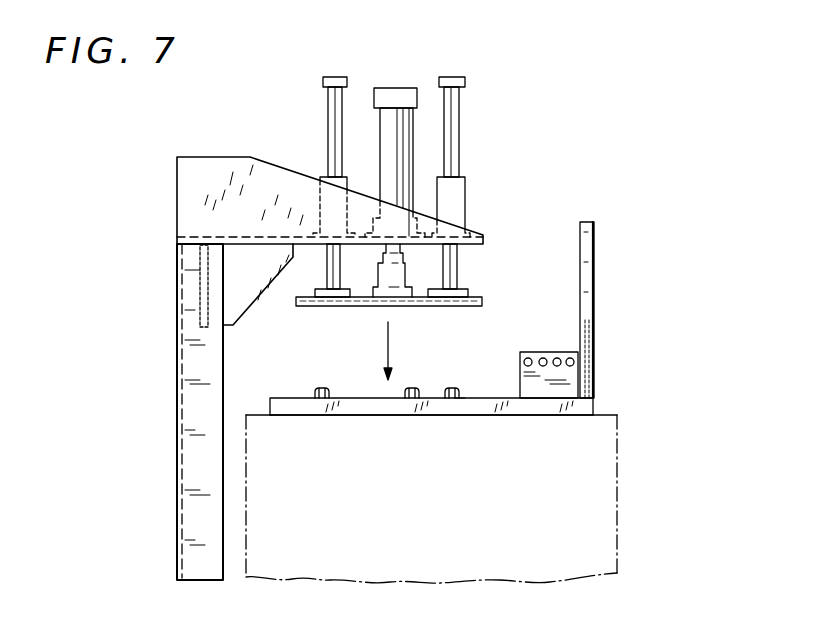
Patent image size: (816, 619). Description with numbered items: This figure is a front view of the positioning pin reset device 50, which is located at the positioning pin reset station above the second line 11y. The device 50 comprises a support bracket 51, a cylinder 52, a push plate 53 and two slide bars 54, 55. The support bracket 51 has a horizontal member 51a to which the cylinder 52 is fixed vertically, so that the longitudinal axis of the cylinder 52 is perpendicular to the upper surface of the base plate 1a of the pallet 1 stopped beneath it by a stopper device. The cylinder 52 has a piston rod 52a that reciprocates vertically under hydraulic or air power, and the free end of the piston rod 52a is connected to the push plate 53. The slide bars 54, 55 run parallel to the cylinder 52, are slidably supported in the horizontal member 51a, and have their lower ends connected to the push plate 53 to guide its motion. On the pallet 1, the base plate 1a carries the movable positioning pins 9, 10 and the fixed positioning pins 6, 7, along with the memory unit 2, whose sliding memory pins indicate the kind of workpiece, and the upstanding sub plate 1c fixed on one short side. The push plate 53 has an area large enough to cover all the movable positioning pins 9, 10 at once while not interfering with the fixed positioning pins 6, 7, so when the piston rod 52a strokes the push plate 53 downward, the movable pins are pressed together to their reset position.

The pallet 1 is at (395, 410).
The base plate 1a is at (537, 412).
The sub plate 1c is at (595, 305).
The memory unit 2 is at (540, 350).
The fixed positioning pin 6 is at (415, 390).
The fixed positioning pin 7 is at (461, 400).
The movable positioning pin 9 is at (315, 390).
The movable positioning pin 10 is at (457, 388).
The second line 11y is at (618, 495).
The positioning pin reset device 50 is at (528, 211).
The support bracket 51 is at (178, 382).
The horizontal member 51a is at (215, 168).
The cylinder 52 is at (392, 113).
The piston rod 52a is at (403, 253).
The push plate 53 is at (370, 307).
The slide bar 54 is at (327, 103).
The slide bar 55 is at (460, 122).